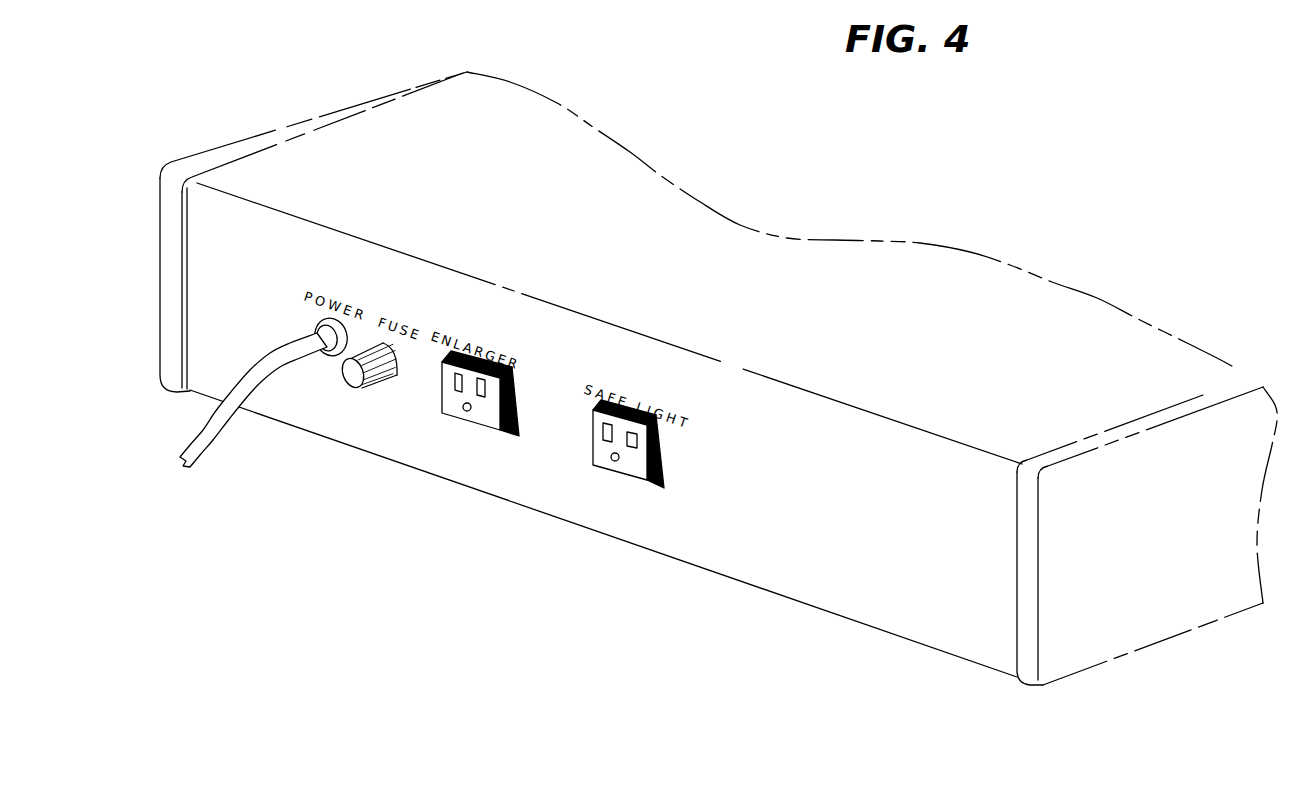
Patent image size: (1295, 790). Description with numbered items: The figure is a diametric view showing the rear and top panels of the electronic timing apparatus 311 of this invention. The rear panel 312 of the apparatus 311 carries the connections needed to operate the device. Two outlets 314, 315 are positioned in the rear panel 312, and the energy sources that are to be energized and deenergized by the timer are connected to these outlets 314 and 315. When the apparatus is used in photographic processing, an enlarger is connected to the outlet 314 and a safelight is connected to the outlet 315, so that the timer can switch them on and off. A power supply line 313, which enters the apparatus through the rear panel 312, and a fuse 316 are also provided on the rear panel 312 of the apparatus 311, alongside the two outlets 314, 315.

The apparatus 311 is at (669, 357).
The rear panel 312 is at (227, 297).
The power supply line 313 is at (263, 377).
The outlet 314 is at (460, 398).
The outlet 315 is at (615, 463).
The fuse 316 is at (355, 377).